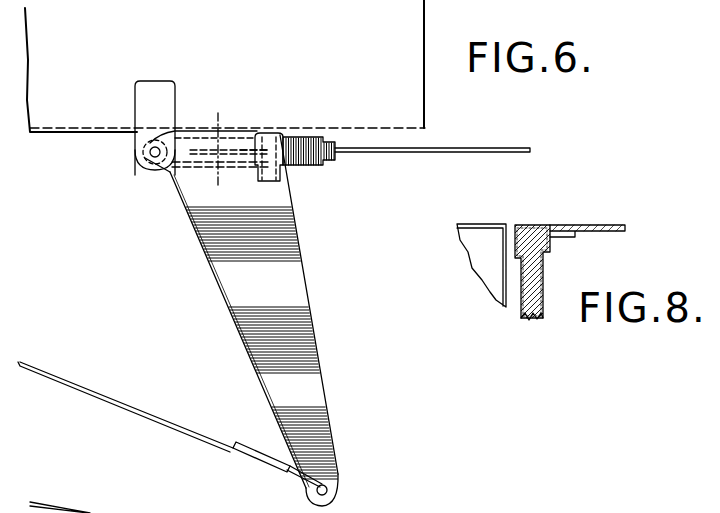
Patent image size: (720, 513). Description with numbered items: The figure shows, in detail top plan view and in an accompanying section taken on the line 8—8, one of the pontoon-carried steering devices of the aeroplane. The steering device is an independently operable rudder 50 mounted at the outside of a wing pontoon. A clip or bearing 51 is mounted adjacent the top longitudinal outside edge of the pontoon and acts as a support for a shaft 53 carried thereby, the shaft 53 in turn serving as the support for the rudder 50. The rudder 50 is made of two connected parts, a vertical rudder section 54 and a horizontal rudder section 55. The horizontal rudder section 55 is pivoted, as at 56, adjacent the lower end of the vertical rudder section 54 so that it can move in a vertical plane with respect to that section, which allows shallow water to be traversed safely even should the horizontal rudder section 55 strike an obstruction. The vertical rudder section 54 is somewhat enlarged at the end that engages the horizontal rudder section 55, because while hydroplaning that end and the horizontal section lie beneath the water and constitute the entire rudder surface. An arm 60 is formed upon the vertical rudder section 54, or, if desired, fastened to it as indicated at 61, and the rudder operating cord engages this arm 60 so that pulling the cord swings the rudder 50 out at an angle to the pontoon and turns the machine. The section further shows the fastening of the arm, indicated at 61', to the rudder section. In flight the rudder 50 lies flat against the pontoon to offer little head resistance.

In FIG. 6, the rudder 50 is at (305, 270).
In FIG. 6, the clip or bearing 51 is at (155, 128).
In FIG. 6, the shaft 53 is at (156, 158).
In FIG. 6, the vertical rudder section 54 is at (327, 162).
In FIG. 6, the horizontal rudder section 55 is at (450, 152).
In FIG. 6, the pivot 56 is at (281, 133).
In FIG. 6, the arm 60 is at (170, 437).
In FIG. 8, the arm 60 is at (608, 225).
In FIG. 6, the fastening 61 is at (255, 180).
In FIG. 8, the hatched post 61' is at (535, 256).
In FIG. 6, the section line 8— 8 is at (217, 151).